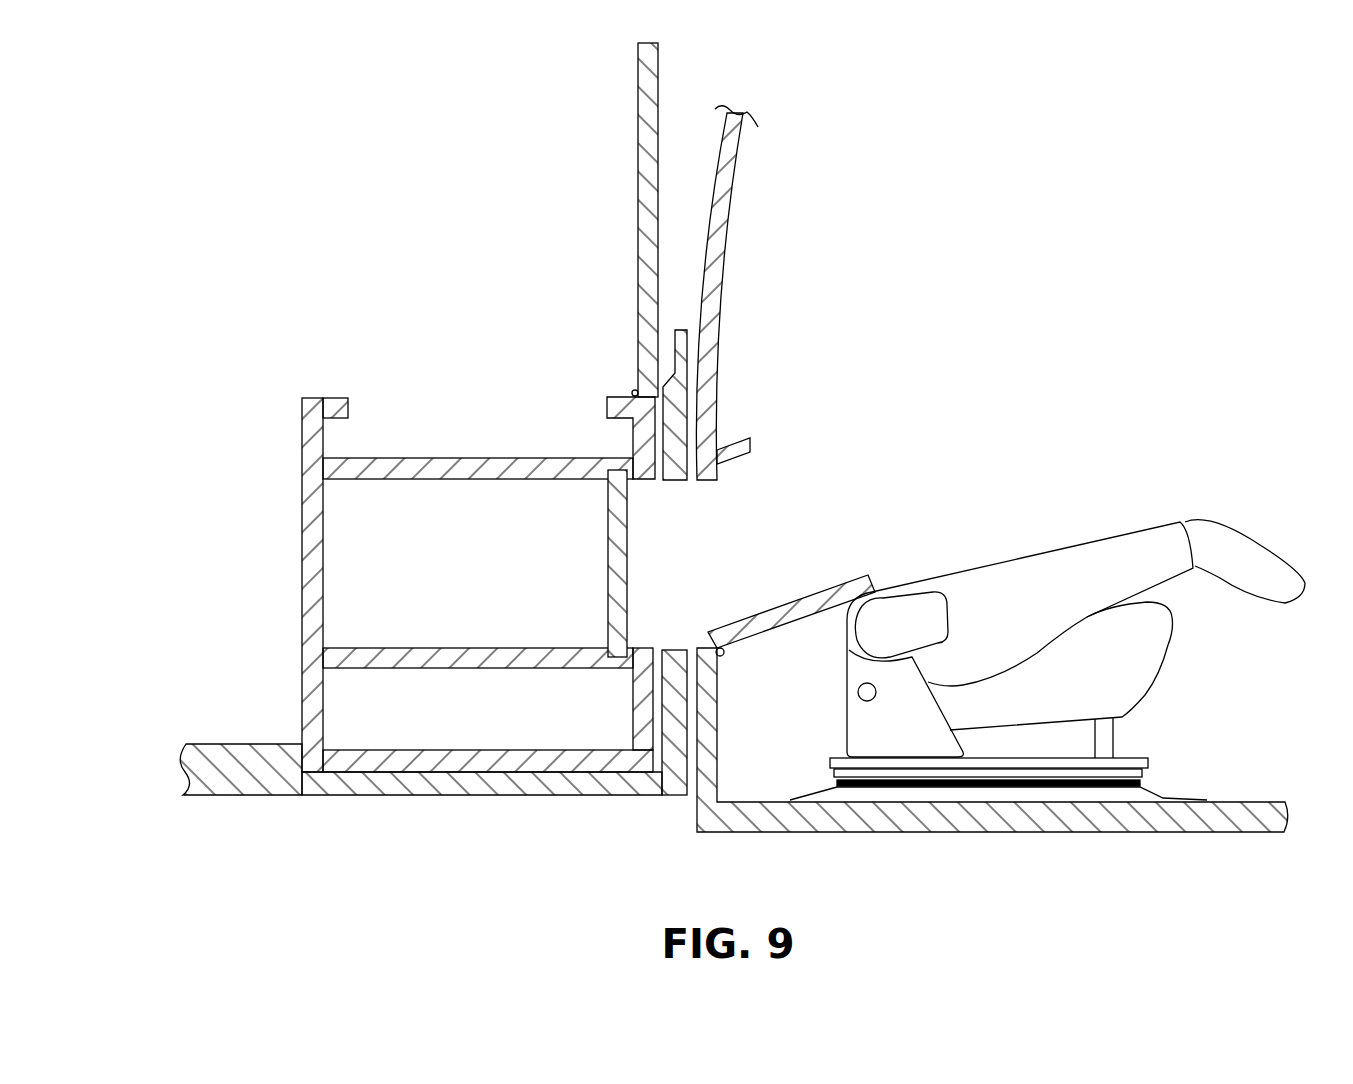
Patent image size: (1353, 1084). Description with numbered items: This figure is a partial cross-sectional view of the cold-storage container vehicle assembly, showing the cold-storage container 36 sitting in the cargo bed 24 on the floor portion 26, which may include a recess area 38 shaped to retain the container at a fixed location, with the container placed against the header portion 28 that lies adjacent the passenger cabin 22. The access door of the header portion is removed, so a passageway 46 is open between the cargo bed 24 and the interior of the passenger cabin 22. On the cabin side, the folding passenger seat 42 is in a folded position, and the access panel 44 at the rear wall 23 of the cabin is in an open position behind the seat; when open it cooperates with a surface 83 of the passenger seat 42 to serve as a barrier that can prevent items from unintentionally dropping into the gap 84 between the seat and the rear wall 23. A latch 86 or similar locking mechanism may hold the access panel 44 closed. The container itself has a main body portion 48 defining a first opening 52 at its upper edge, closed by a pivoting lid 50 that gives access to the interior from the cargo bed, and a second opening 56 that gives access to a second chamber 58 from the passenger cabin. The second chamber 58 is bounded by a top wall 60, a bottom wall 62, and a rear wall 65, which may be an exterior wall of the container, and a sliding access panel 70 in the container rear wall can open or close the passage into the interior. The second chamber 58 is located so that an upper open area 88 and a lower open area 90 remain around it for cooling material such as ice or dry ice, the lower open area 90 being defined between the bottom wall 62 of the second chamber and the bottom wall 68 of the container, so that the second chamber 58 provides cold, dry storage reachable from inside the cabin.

The passenger cabin 22 is at (1165, 268).
The rear wall 23 is at (710, 708).
The cargo bed 24 is at (168, 585).
The floor portion 26 is at (248, 796).
The header portion 28 is at (677, 325).
The cold-storage container 36 is at (280, 317).
The recess area 38 is at (352, 795).
The passenger seat 42 is at (1128, 690).
The access panel 44 is at (851, 578).
The passageway 46 is at (730, 517).
The main body portion 48 is at (302, 507).
The pivoting lid 50 is at (643, 167).
The first opening 52 is at (350, 410).
The second opening 56 is at (640, 650).
The second chamber 58 is at (350, 590).
The top wall 60 is at (457, 463).
The bottom wall 62 is at (421, 660).
The rear wall 65 is at (305, 620).
The bottom wall 68 is at (418, 763).
The sliding access panel 70 is at (627, 562).
The surface 83 is at (1015, 557).
The gap 84 is at (780, 765).
The latch 86 is at (740, 436).
The upper open area 88 is at (548, 415).
The lower open area 90 is at (518, 735).